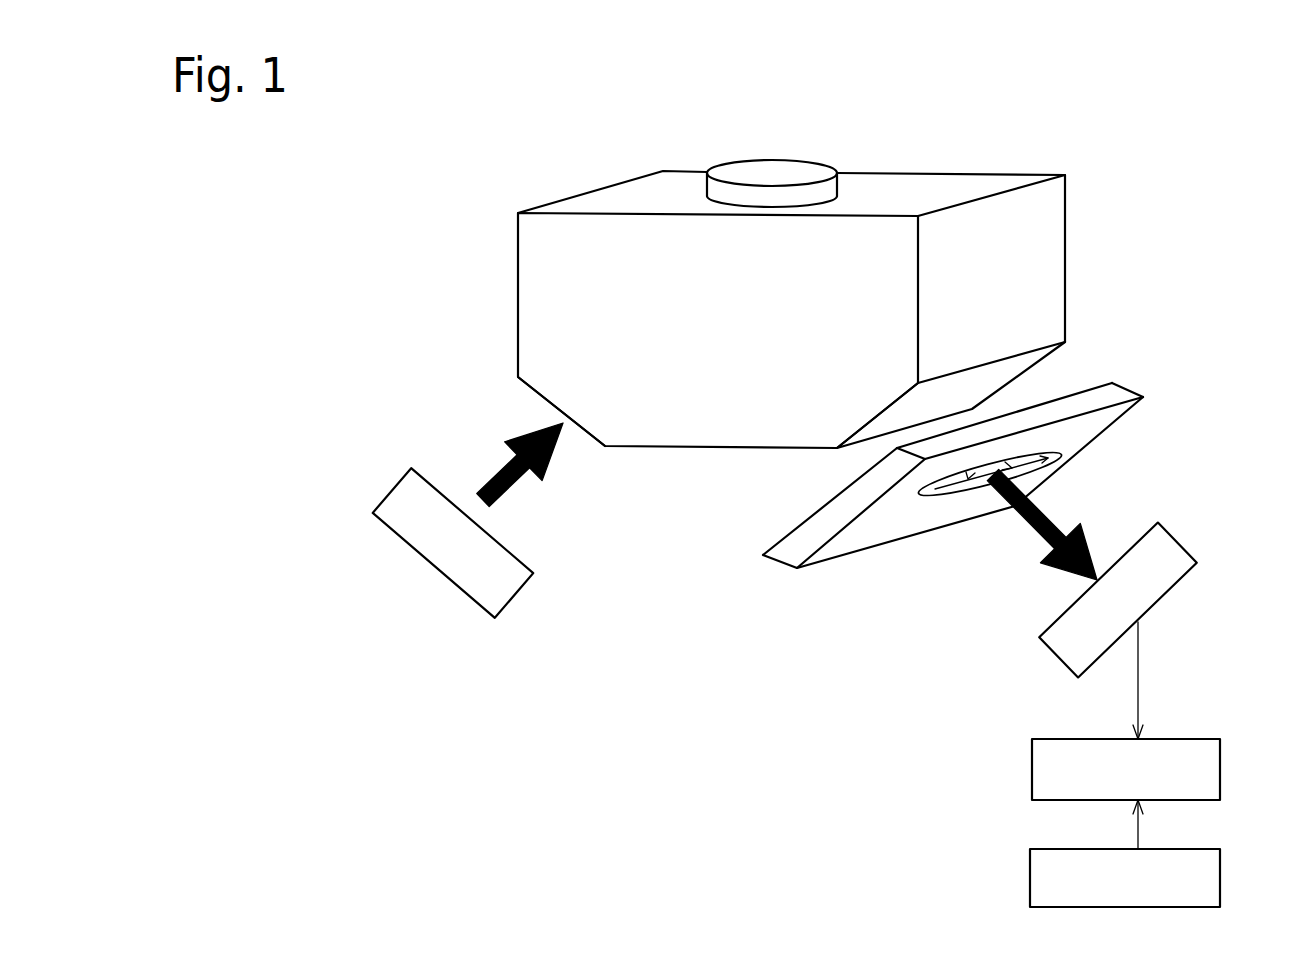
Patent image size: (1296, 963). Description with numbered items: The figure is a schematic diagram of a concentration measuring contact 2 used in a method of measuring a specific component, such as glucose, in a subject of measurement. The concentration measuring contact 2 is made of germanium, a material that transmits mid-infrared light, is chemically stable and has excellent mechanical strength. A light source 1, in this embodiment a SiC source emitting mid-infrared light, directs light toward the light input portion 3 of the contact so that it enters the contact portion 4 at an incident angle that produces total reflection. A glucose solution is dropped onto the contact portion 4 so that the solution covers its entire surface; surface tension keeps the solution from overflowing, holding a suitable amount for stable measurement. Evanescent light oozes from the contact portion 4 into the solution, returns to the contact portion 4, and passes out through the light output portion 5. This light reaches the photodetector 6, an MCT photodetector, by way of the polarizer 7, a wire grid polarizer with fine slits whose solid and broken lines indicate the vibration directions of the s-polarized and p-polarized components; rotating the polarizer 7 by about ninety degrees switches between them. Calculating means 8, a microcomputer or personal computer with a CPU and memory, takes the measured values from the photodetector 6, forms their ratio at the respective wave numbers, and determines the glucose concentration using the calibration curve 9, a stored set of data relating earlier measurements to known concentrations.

The light source 1 is at (497, 617).
The concentration measuring contact 2 is at (667, 270).
The light input portion 3 is at (548, 402).
The contact portion 4 is at (813, 163).
The light output portion 5 is at (982, 383).
The photodetector 6 is at (1180, 541).
The polarizer 7 is at (898, 540).
The calculating means 8 is at (1222, 762).
The calibration curve 9 is at (1222, 890).